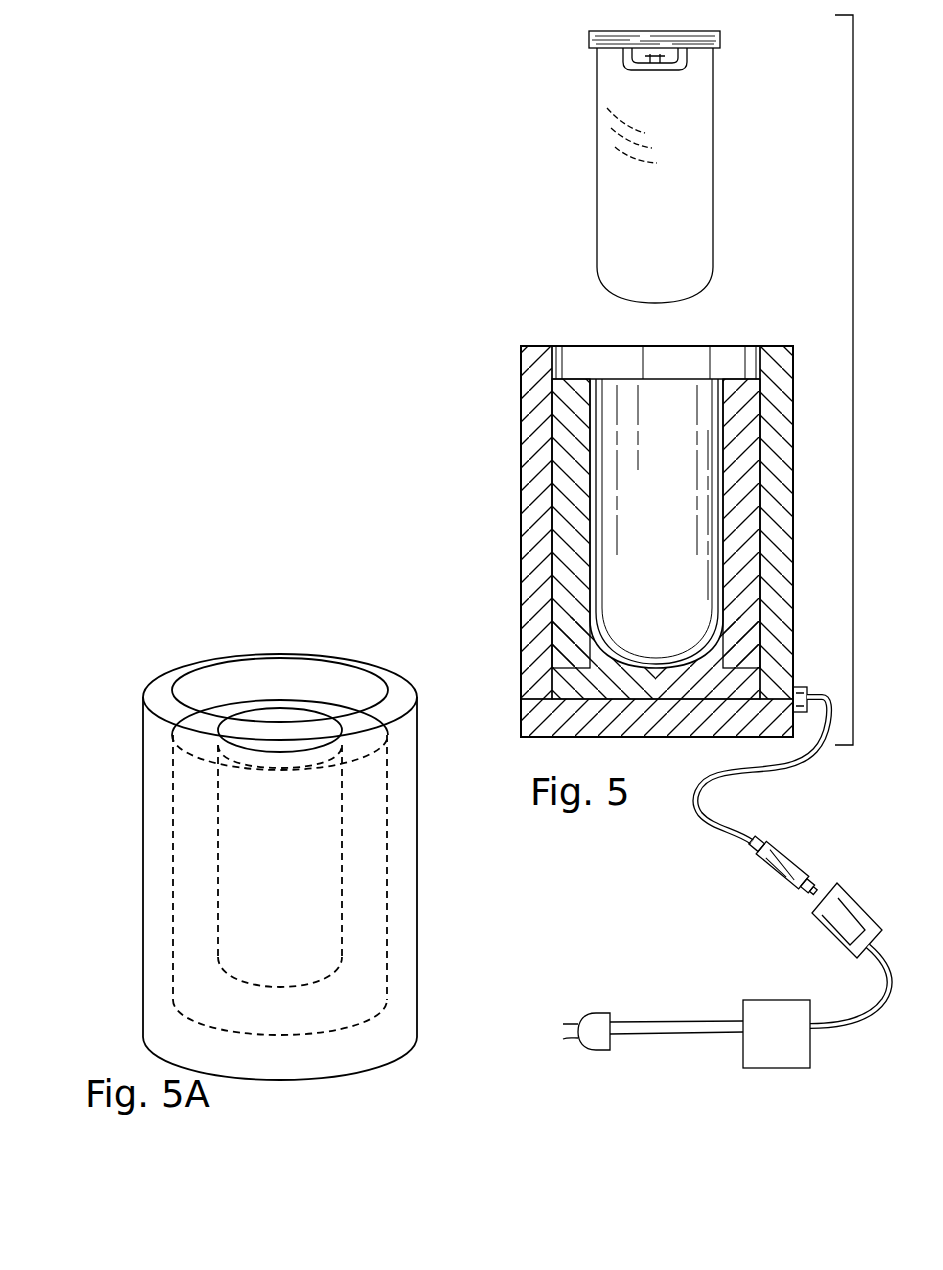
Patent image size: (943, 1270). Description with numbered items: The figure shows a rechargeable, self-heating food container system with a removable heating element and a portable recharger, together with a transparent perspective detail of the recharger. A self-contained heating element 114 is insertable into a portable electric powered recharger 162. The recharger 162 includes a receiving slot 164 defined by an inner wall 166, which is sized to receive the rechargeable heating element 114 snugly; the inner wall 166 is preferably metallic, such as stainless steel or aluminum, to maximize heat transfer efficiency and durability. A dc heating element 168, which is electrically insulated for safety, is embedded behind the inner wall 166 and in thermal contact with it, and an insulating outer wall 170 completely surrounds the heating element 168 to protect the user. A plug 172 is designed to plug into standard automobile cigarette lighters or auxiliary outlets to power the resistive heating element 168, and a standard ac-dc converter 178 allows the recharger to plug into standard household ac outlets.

In FIG. 5, the self-contained heating element 114 is at (713, 130).
In FIG. 5, the portable electric powered recharger 162 is at (483, 332).
In FIG. 5A, the portable electric powered recharger 162 is at (111, 602).
In FIG. 5, the receiving slot 164 is at (666, 420).
In FIG. 5, the inner wall 166 is at (596, 385).
In FIG. 5A, the inner wall 166 is at (279, 718).
In FIG. 5, the dc heating element 168 is at (745, 400).
In FIG. 5A, the dc heating element 168 is at (365, 805).
In FIG. 5, the insulating outer wall 170 is at (785, 433).
In FIG. 5A, the insulating outer wall 170 is at (163, 678).
In FIG. 5, the plug 172 is at (770, 866).
In FIG. 5, the ac-dc converter 178 is at (726, 1003).